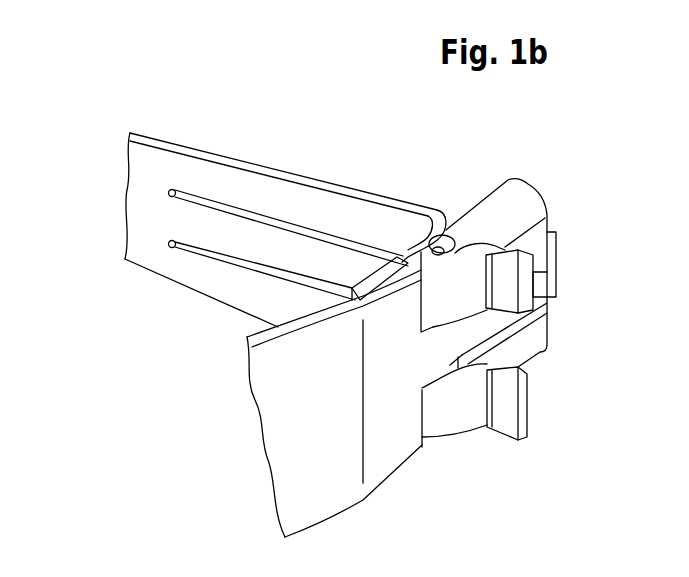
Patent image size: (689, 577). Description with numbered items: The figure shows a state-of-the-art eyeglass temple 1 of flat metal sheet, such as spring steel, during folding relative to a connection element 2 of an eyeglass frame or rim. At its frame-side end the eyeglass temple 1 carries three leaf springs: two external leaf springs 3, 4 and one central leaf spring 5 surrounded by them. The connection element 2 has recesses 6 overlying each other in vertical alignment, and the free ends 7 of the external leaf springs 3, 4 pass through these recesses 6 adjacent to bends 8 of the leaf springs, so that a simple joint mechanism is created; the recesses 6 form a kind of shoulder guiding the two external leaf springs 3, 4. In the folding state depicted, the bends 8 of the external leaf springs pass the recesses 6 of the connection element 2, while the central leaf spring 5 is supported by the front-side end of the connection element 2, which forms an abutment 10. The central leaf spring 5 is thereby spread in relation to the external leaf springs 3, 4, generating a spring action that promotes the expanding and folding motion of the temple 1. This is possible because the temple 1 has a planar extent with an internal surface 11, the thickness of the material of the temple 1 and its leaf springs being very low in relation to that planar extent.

The eyeglass temple 1 is at (125, 157).
The connection element 2 is at (288, 447).
The external leaf spring 3 is at (244, 192).
The external leaf spring 4 is at (259, 303).
The central leaf spring 5 is at (247, 243).
The recess 6 is at (431, 447).
The free end 7 is at (524, 398).
The bend 8 is at (428, 285).
The abutment 10 is at (556, 279).
The internal surface 11 is at (343, 207).